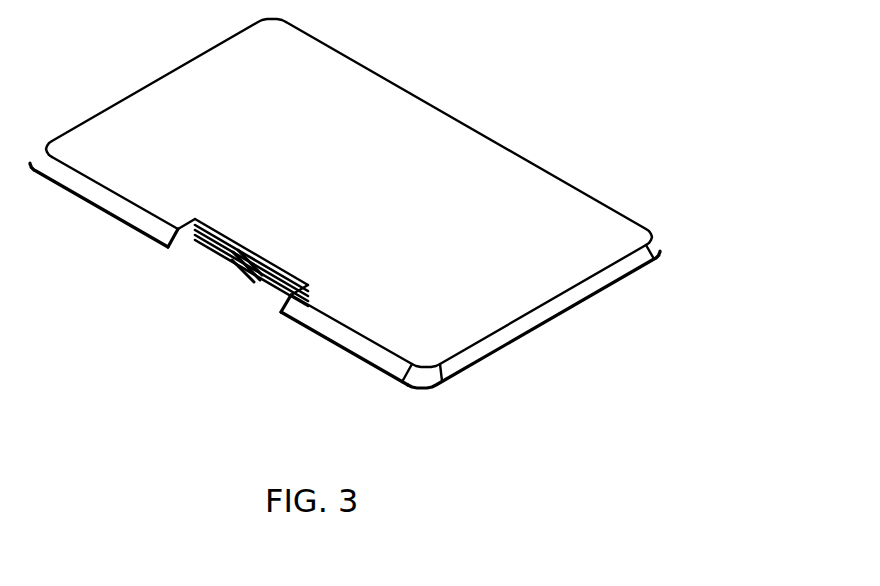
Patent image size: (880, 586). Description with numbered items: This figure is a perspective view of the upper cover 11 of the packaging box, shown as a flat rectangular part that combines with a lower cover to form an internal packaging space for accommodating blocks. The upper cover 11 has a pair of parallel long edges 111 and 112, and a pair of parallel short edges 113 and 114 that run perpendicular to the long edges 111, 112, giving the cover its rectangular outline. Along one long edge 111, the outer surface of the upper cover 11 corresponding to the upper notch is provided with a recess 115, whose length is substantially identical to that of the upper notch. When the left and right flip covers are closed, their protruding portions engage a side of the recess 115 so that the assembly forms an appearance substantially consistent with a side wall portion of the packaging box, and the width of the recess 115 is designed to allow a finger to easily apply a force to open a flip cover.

The upper cover 11 is at (345, 194).
The long edge 111 is at (97, 207).
The long edge 112 is at (400, 88).
The short edge 113 is at (140, 82).
The short edge 114 is at (547, 320).
The recess 115 is at (232, 243).